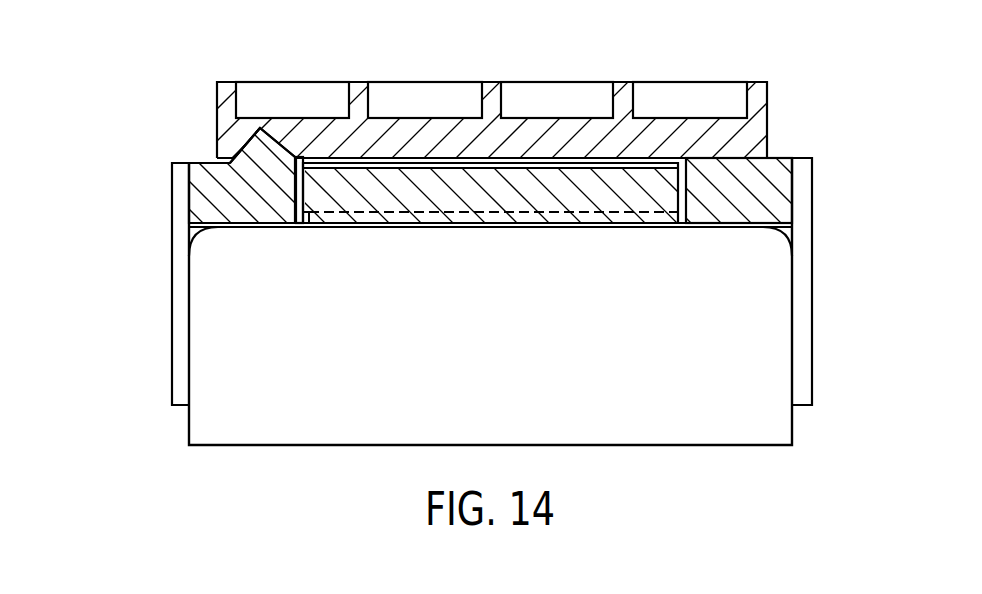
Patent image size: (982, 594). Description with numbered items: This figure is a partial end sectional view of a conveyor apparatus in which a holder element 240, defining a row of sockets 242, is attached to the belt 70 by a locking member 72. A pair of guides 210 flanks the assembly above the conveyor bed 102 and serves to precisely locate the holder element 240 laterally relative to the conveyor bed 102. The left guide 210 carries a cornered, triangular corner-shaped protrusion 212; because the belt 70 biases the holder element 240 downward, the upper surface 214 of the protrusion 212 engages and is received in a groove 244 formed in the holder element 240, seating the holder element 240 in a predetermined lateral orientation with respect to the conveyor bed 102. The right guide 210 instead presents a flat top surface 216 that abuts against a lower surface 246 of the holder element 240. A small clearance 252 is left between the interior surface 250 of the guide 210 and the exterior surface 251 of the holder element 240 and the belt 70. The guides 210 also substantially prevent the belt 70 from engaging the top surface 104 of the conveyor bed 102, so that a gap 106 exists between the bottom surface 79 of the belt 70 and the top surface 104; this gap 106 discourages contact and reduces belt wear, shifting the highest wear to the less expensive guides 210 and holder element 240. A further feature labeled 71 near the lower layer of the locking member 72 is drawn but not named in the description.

The holder element 240 is at (794, 89).
The sockets 242 is at (663, 96).
The groove 244 is at (252, 190).
The protrusion 212 is at (270, 148).
The upper surface of the protrusion 214 is at (242, 133).
The top surface of the conveyor bed 104 is at (205, 206).
The interior surface of the guide 250 is at (307, 177).
The locking member 72 is at (438, 198).
The belt 70 is at (618, 240).
The exterior surface of the holder element 251 is at (298, 196).
The clearance 252 is at (304, 224).
The lower layer 71 is at (367, 226).
The gap 106 is at (549, 229).
The bottom surface of the belt 79 is at (662, 229).
The lower surface of the holder element 246 is at (737, 160).
The flat top surface 216 is at (788, 158).
The guides 210 is at (172, 197).
The conveyor bed 102 is at (747, 435).